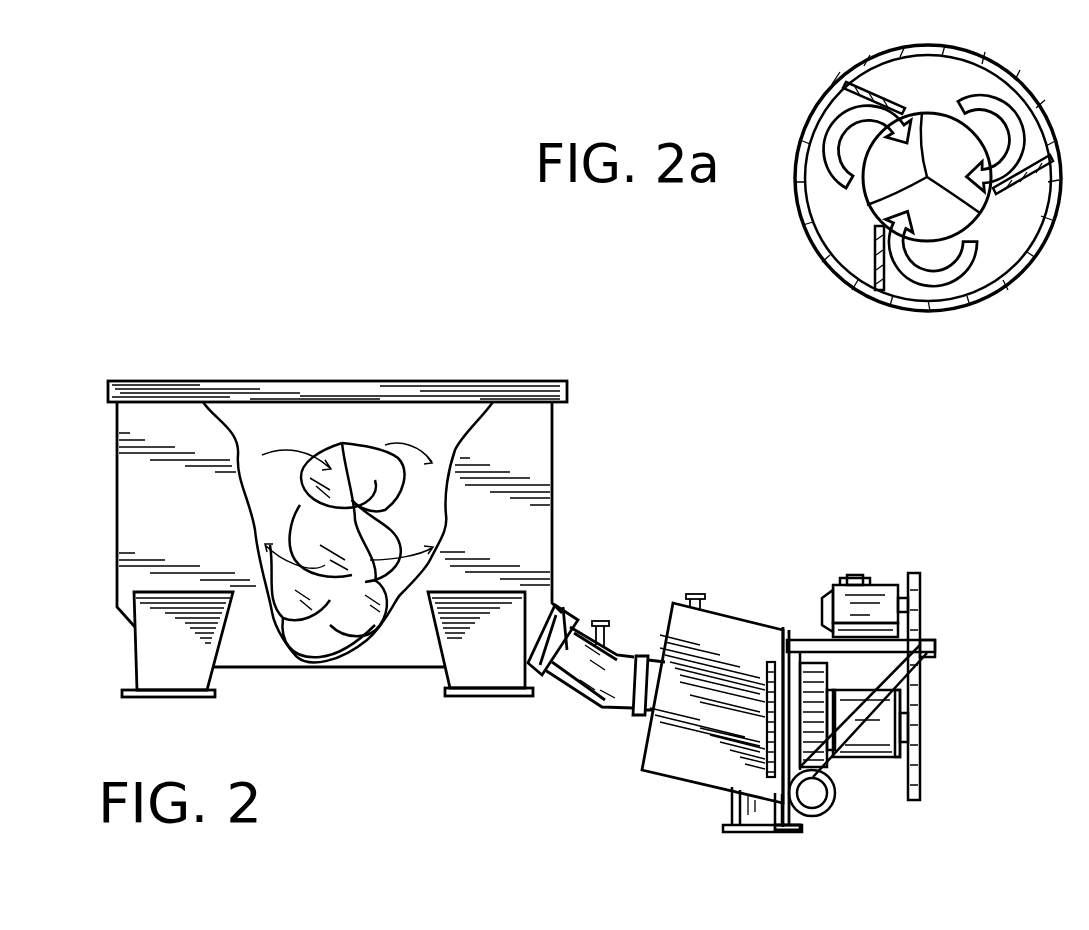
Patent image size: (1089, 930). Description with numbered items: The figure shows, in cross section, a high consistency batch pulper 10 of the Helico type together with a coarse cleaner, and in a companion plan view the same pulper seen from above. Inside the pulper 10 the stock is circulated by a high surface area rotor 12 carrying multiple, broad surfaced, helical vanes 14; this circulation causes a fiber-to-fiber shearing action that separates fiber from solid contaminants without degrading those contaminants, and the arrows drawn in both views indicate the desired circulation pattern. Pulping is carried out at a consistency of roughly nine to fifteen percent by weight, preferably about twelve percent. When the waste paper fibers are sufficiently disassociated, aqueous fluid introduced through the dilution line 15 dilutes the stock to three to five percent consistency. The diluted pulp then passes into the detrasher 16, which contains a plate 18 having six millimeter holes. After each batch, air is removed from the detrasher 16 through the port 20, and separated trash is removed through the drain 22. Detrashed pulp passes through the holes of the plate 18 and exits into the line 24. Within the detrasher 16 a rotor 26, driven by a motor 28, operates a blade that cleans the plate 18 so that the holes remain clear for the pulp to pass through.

In FIG. 2, the batch pulper 10 is at (117, 483).
In FIG. 2a, the rotor 12 is at (980, 212).
In FIG. 2, the rotor 12 is at (312, 437).
In FIG. 2, the helical vanes 14 is at (365, 480).
In FIG. 2, the dilution line 15 is at (598, 620).
In FIG. 2, the detrasher 16 is at (758, 622).
In FIG. 2, the plate 18 is at (762, 730).
In FIG. 2, the port 20 is at (696, 594).
In FIG. 2, the drain 22 is at (765, 840).
In FIG. 2, the line 24 is at (870, 760).
In FIG. 2, the rotor 26 is at (908, 732).
In FIG. 2, the motor 28 is at (891, 583).